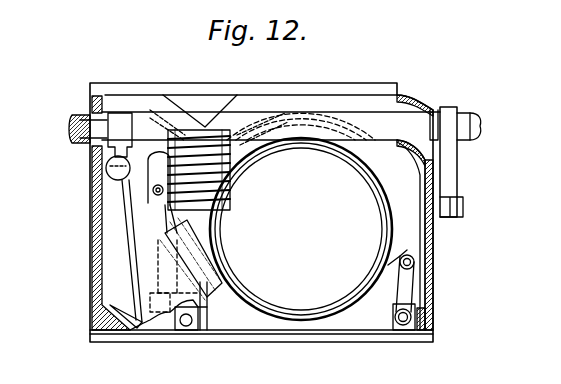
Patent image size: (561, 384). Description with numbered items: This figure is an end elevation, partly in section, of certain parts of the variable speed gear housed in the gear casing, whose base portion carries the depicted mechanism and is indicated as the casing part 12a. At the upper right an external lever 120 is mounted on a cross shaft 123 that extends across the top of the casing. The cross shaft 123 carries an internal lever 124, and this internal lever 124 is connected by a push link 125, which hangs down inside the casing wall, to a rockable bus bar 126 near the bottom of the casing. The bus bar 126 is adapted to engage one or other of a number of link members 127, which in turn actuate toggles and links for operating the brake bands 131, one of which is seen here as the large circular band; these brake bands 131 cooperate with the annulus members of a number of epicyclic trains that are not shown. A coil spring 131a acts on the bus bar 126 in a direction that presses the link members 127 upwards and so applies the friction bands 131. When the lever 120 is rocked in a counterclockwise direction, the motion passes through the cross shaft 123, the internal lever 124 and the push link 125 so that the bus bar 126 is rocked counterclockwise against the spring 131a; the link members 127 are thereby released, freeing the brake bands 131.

The frame base 12a is at (387, 335).
The lever 120 is at (450, 170).
The cross shaft 123 is at (375, 125).
The internal lever 124 is at (90, 156).
The push link 125 is at (132, 240).
The rockable bus bar 126 is at (165, 318).
The link members 127 is at (148, 201).
The brake bands 131 is at (294, 318).
The spring 131a is at (231, 191).